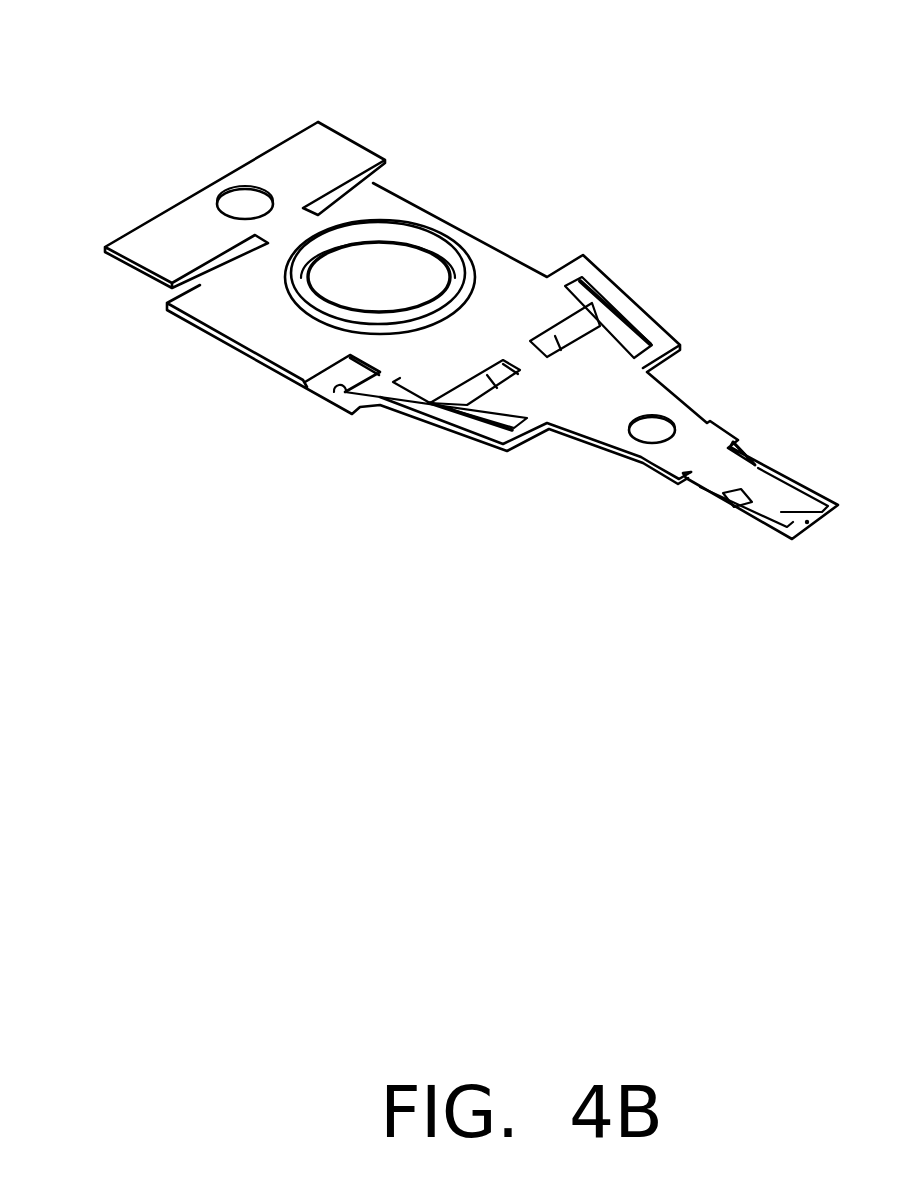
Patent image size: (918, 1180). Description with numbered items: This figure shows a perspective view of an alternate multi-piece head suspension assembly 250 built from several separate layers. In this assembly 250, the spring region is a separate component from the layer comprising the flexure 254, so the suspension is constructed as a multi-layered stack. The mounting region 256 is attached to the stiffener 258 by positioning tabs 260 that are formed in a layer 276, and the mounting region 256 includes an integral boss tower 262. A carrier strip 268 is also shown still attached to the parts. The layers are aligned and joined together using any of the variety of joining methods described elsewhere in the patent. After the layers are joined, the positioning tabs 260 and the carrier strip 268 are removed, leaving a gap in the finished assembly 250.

The multi-piece head suspension assembly 250 is at (264, 509).
The flexure 254 is at (715, 500).
The mounting region 256 is at (383, 204).
The stiffener 258 is at (637, 385).
The positioning tabs 260 is at (630, 308).
The boss tower 262 is at (312, 280).
The carrier strip 268 is at (302, 147).
The layer 276 is at (592, 246).